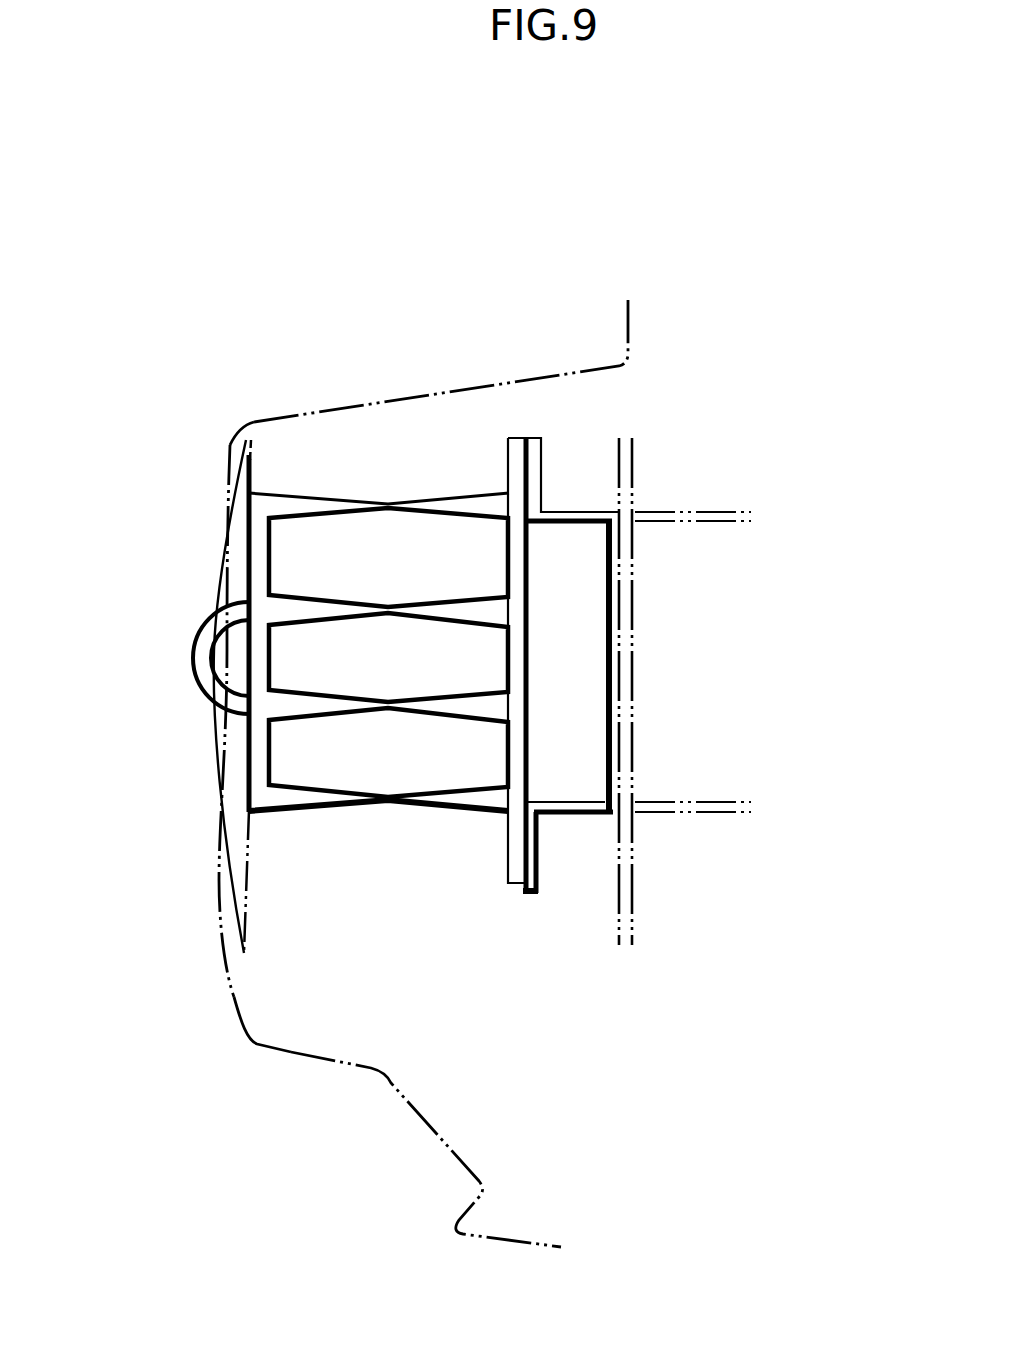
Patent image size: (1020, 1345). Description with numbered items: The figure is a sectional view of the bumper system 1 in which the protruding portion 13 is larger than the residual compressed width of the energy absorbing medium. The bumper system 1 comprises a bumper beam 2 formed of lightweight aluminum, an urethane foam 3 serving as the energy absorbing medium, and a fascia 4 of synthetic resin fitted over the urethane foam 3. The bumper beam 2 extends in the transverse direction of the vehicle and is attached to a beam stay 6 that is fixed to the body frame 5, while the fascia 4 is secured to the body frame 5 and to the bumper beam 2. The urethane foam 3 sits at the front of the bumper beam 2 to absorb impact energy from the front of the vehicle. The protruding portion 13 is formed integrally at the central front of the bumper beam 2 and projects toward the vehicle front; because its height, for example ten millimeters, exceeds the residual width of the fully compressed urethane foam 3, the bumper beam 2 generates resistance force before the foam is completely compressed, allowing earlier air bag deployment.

The bumper system 1 is at (205, 514).
The bumper beam 2 is at (348, 824).
The urethane foam 3 is at (237, 800).
The fascia 4 is at (363, 403).
The body frame 5 is at (720, 812).
The beam stay 6 is at (567, 805).
The protruding portion 13 is at (193, 657).